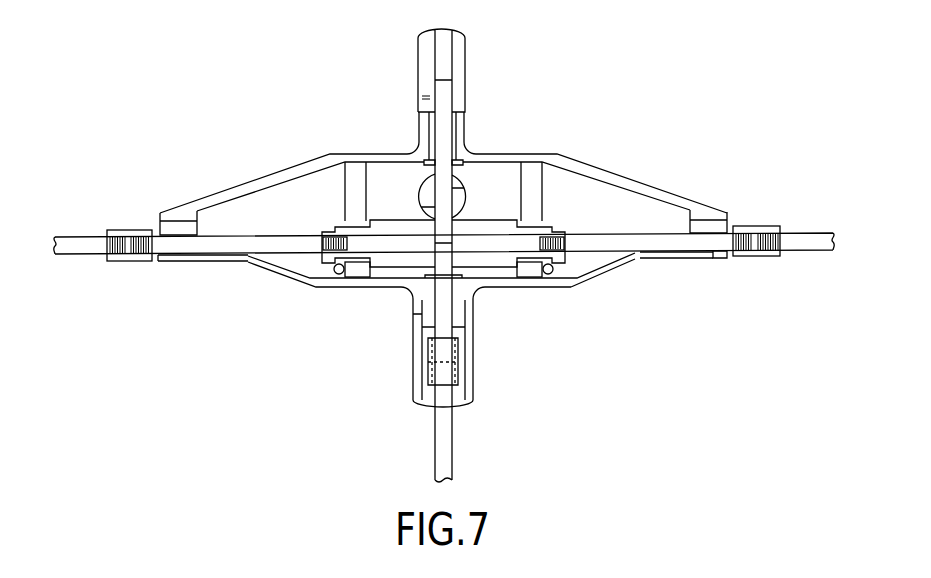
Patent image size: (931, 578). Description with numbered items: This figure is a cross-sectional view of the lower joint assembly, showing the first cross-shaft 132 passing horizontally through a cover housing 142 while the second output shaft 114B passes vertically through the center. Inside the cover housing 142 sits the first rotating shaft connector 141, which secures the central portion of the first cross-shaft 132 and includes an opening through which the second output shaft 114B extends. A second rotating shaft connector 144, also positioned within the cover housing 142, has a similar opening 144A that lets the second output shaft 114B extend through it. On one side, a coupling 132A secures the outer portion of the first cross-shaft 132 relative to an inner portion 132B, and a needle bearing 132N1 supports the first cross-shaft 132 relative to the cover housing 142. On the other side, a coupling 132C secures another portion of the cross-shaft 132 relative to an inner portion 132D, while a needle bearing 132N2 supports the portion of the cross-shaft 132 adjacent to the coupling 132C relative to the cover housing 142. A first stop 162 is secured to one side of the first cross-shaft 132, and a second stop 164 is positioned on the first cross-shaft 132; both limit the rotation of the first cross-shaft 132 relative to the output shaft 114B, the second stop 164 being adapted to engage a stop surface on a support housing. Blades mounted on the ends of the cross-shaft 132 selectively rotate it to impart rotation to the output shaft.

The second output shaft 114B is at (440, 92).
The first cross-shaft 132 is at (830, 240).
The coupling 132A is at (757, 228).
The inner portion 132B is at (640, 243).
The coupling 132C is at (123, 258).
The inner portion 132D is at (217, 258).
The needle bearing 132N1 is at (710, 255).
The needle bearing 132N2 is at (157, 232).
The first rotating shaft connector 141 is at (488, 228).
The cover housing 142 is at (677, 198).
The second rotating shaft connector 144 is at (458, 185).
The opening 144A is at (428, 192).
The first stop 162 is at (338, 265).
The second stop 164 is at (552, 268).